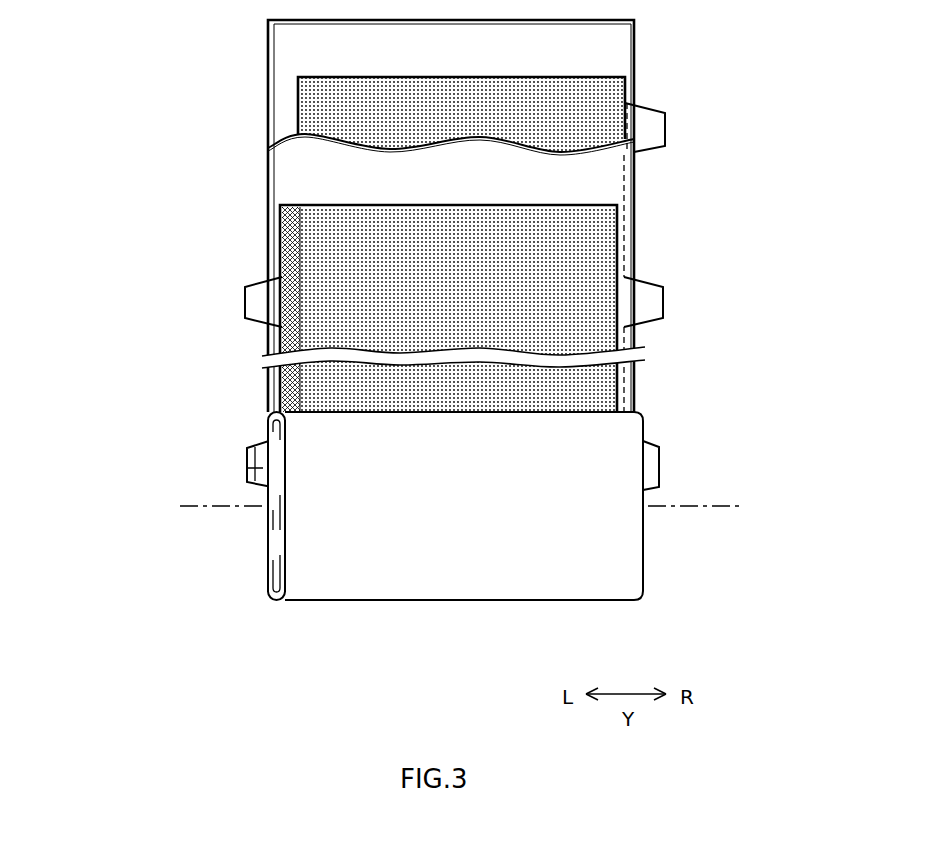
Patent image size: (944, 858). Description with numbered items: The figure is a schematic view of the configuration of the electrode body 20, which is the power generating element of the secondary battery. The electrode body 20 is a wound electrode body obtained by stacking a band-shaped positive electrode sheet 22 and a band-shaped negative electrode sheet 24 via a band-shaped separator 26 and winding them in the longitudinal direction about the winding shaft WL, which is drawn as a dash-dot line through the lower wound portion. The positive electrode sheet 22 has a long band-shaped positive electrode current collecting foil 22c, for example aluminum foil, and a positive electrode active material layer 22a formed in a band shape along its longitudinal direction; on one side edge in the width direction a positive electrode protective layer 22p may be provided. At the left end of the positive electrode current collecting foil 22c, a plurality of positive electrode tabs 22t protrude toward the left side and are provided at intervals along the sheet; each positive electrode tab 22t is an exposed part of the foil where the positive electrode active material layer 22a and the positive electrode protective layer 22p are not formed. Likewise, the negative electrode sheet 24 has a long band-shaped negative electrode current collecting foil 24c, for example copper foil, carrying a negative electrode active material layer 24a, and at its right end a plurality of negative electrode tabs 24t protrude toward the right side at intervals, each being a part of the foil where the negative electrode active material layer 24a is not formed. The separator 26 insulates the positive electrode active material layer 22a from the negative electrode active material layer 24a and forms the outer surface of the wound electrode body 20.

The electrode body 20 is at (512, 580).
The positive electrode sheet 22 is at (343, 346).
The positive electrode active material layer 22a is at (330, 268).
The positive electrode current collecting foil 22c is at (278, 340).
The positive electrode protective layer 22p is at (290, 223).
The positive electrode tab 22t is at (231, 382).
The negative electrode sheet 24 is at (563, 282).
The negative electrode active material layer 24a is at (602, 99).
The negative electrode current collecting foil 24c is at (628, 220).
The negative electrode tab 24t is at (655, 128).
The separator 26 is at (290, 38).
The winding shaft WL is at (718, 503).